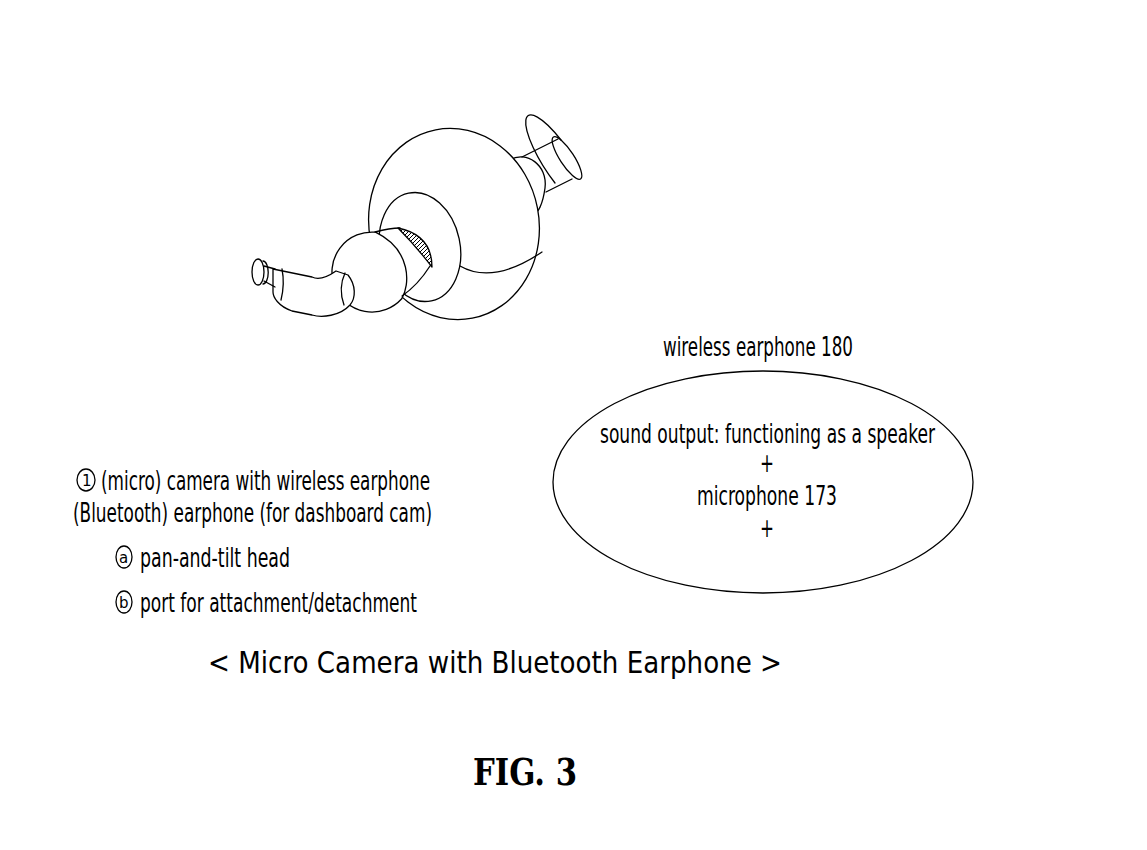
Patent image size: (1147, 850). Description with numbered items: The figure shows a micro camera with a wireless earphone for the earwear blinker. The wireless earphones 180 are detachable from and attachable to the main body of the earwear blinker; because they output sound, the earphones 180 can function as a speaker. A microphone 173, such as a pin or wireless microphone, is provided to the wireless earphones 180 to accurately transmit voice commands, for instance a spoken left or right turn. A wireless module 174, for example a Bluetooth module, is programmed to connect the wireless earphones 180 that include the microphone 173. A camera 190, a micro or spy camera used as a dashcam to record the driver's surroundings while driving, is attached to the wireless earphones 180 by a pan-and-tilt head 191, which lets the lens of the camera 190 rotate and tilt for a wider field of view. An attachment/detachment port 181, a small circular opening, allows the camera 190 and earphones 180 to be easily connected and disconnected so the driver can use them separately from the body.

The wireless earphones 180 is at (458, 158).
The attachment/detachment port 181 is at (392, 226).
The camera 190 is at (232, 250).
The microphone 173 is at (507, 228).
The pan-and-tilt head 191 is at (448, 307).
The wireless module 174 is at (766, 561).